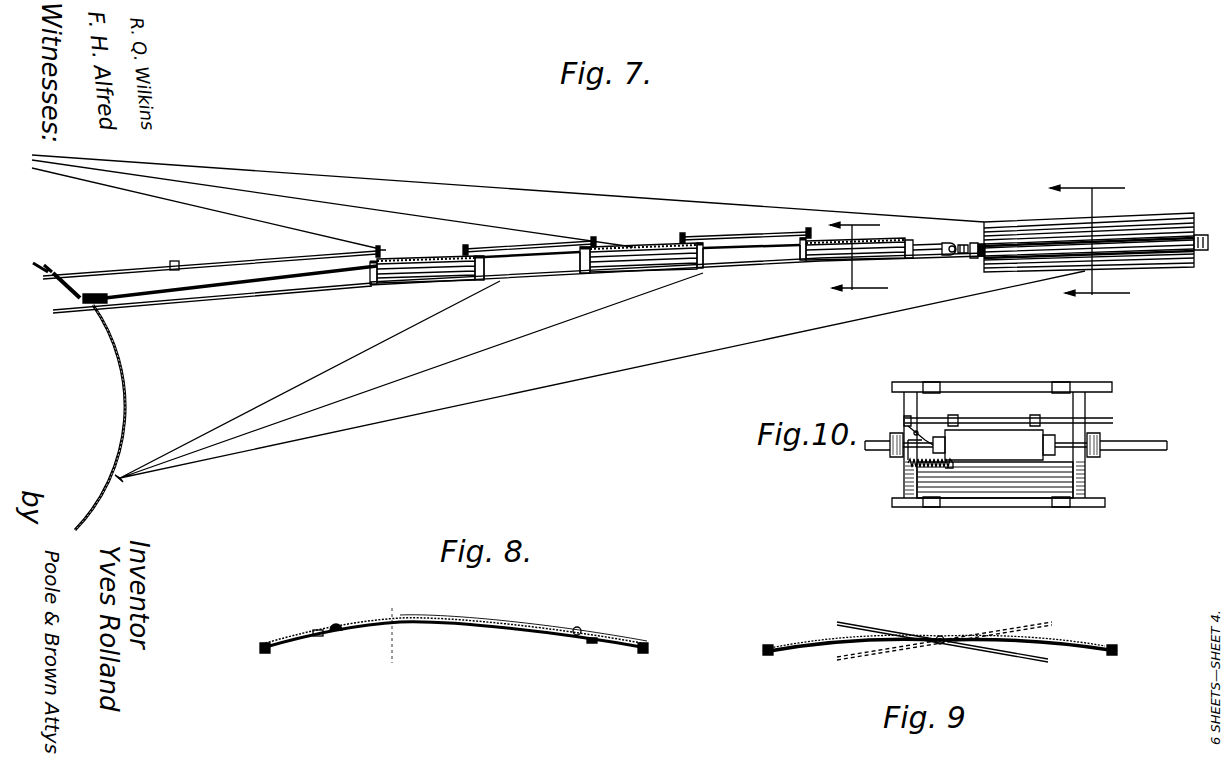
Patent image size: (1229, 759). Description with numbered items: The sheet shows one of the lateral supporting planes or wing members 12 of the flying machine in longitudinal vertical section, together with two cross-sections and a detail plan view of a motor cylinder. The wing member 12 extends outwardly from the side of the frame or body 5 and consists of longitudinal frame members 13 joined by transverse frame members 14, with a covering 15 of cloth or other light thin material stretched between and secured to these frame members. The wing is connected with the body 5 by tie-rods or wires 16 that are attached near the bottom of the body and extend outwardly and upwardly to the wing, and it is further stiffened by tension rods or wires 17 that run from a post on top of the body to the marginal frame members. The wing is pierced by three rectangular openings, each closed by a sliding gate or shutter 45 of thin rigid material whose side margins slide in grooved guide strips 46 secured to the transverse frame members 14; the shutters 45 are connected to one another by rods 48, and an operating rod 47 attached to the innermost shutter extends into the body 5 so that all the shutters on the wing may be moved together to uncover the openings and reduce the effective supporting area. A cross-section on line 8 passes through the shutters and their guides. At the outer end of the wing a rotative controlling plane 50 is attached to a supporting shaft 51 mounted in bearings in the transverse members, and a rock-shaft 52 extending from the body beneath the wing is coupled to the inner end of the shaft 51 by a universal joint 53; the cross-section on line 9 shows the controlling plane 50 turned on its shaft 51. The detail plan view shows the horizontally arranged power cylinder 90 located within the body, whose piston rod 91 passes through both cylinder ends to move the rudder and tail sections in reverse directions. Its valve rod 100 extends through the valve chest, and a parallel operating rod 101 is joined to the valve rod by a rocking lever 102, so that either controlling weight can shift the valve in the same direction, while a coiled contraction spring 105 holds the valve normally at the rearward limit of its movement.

In FIG. 7, the frame or body 5 is at (50, 260).
In FIG. 7, the section line 8— 8 is at (859, 253).
In FIG. 7, the section line 9— 9 is at (1090, 242).
In FIG. 7, the lateral supporting plane or wing member 12 is at (654, 180).
In FIG. 8, the lateral supporting plane or wing member 12 is at (475, 643).
In FIG. 7, the longitudinal frame member 13 is at (755, 278).
In FIG. 8, the longitudinal frame member 13 is at (262, 645).
In FIG. 9, the longitudinal frame member 13 is at (767, 645).
In FIG. 7, the transverse frame member 14 is at (371, 285).
In FIG. 8, the transverse frame member 14 is at (292, 642).
In FIG. 9, the transverse frame member 14 is at (806, 652).
In FIG. 7, the covering 15 is at (266, 285).
In FIG. 8, the covering 15 is at (298, 640).
In FIG. 9, the covering 15 is at (1072, 644).
In FIG. 7, the tie-rod or wire 16 is at (372, 350).
In FIG. 7, the tension rod or wire 17 is at (378, 180).
In FIG. 7, the sliding gate or shutter 45 is at (430, 257).
In FIG. 8, the sliding gate or shutter 45 is at (455, 623).
In FIG. 8, the grooved guide strip 46 is at (315, 631).
In FIG. 7, the operating rod 47 is at (262, 261).
In FIG. 7, the connecting rod 48 is at (538, 249).
In FIG. 8, the connecting rod 48 is at (336, 623).
In FIG. 7, the rotative controlling plane 50 is at (1146, 212).
In FIG. 9, the rotative controlling plane 50 is at (873, 615).
In FIG. 7, the supporting shaft 51 is at (985, 258).
In FIG. 9, the supporting shaft 51 is at (942, 636).
In FIG. 7, the rock-shaft 52 is at (170, 299).
In FIG. 7, the universal joint 53 is at (961, 255).
In FIG. 10, the power cylinder 90 is at (1019, 500).
In FIG. 10, the piston rod 91 is at (1112, 446).
In FIG. 10, the valve rod 100 is at (1060, 446).
In FIG. 10, the operating rod 101 is at (1115, 415).
In FIG. 10, the rocking lever 102 is at (905, 420).
In FIG. 10, the spring 105 is at (908, 465).